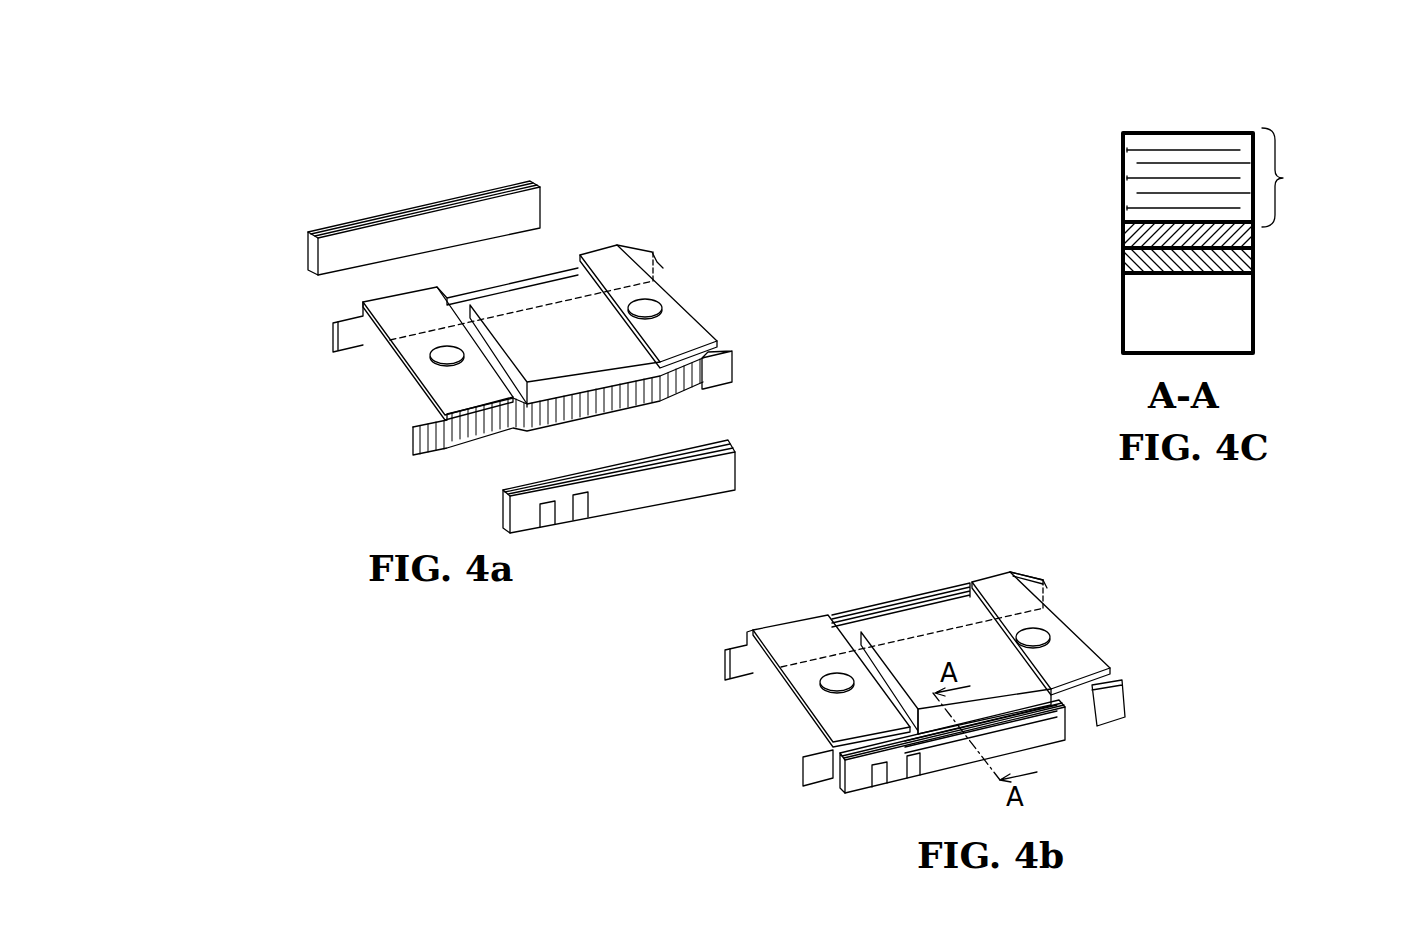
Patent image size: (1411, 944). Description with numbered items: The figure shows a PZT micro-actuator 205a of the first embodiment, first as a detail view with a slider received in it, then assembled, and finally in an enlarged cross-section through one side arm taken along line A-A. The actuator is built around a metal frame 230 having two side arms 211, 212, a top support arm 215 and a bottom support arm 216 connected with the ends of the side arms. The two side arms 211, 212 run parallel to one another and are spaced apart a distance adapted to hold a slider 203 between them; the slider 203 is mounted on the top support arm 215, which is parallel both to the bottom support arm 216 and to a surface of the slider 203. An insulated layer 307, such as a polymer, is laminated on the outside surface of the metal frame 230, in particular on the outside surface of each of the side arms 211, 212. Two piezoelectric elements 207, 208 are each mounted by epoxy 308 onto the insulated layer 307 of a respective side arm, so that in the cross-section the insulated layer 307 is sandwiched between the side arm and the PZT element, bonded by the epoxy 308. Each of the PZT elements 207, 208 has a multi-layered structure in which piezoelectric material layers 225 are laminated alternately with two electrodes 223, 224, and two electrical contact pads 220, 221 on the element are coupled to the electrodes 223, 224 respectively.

In FIG. 4a, the PZT micro-actuator 205a is at (342, 108).
In FIG. 4a, the piezoelectric element 207 is at (306, 228).
In FIG. 4b, the piezoelectric element 207 is at (883, 596).
In FIG. 4C, the piezoelectric element 207 is at (1322, 177).
In FIG. 4a, the piezoelectric element 208 is at (692, 512).
In FIG. 4b, the piezoelectric element 208 is at (1018, 752).
In FIG. 4a, the side arm 211 is at (333, 326).
In FIG. 4b, the side arm 211 is at (1043, 585).
In FIG. 4C, the side arm 211 is at (1228, 314).
In FIG. 4a, the side arm 212 is at (735, 355).
In FIG. 4b, the side arm 212 is at (1110, 702).
In FIG. 4a, the top support arm 215 is at (623, 270).
In FIG. 4b, the top support arm 215 is at (1012, 598).
In FIG. 4a, the bottom support arm 216 is at (418, 347).
In FIG. 4b, the bottom support arm 216 is at (808, 675).
In FIG. 4a, the slider 203 is at (690, 312).
In FIG. 4b, the slider 203 is at (1078, 636).
In FIG. 4a, the electrical contact pad 220 is at (547, 522).
In FIG. 4a, the electrical contact pad 221 is at (584, 515).
In FIG. 4C, the electrode 223 is at (1226, 193).
In FIG. 4C, the electrode 224 is at (1143, 207).
In FIG. 4C, the piezoelectric material layers 225 is at (1180, 140).
In FIG. 4a, the metal frame 230 is at (553, 268).
In FIG. 4b, the metal frame 230 is at (970, 592).
In FIG. 4a, the insulated layer 307 is at (362, 317).
In FIG. 4C, the insulated layer 307 is at (1238, 262).
In FIG. 4C, the epoxy 308 is at (1238, 238).